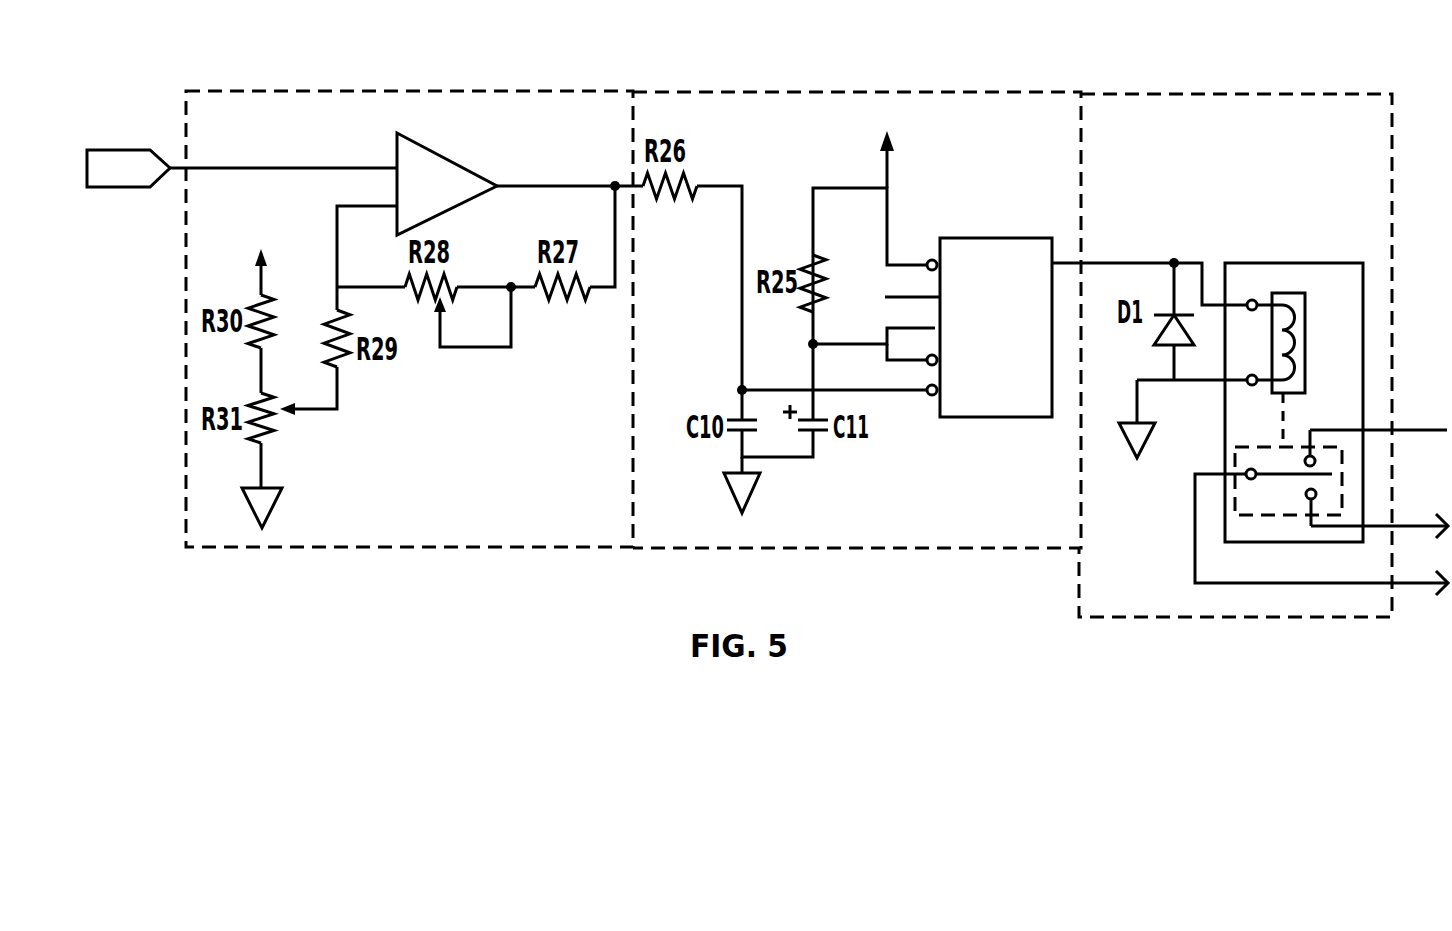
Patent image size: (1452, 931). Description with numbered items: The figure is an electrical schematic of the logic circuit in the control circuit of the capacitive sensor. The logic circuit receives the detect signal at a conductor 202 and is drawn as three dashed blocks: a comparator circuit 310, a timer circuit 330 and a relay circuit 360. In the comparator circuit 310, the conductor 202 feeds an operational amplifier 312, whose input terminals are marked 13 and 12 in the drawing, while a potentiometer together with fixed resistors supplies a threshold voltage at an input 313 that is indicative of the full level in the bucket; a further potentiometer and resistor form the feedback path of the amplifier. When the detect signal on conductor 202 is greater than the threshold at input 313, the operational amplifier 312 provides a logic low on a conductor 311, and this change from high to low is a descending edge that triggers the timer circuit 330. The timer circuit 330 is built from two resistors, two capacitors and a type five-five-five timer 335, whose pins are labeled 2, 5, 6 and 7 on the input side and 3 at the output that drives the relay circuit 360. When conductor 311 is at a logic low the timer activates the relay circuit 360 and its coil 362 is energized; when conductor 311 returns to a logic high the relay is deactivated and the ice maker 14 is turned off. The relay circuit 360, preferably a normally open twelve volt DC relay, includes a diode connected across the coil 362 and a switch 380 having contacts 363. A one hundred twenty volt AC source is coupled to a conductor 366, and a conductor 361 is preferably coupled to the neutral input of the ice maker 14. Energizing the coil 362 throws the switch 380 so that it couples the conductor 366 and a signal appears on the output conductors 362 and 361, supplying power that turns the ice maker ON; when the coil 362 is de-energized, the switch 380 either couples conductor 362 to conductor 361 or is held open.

The conductor 202 is at (224, 168).
The comparator circuit 310 is at (472, 91).
The conductor 311 is at (517, 185).
The operational amplifier 312 is at (442, 152).
The input 313 is at (350, 205).
The timer circuit 330 is at (925, 92).
The 555 timer 335 is at (1008, 238).
The relay circuit 360 is at (1288, 94).
The conductor 361 is at (1405, 526).
The coil 362 is at (1282, 293).
The contacts 363 is at (1251, 468).
The conductor 366 is at (1422, 430).
The switch 380 is at (1338, 447).
The op amp inverting input pin 12 is at (371, 189).
The op amp non-inverting input pin 13 is at (371, 147).
The ice maker 14 is at (498, 209).
The timer pin 2 is at (912, 313).
The timer output pin 3 is at (1067, 237).
The timer pin 5 is at (912, 282).
The timer pin 6 is at (912, 313).
The timer pin 7 is at (912, 344).